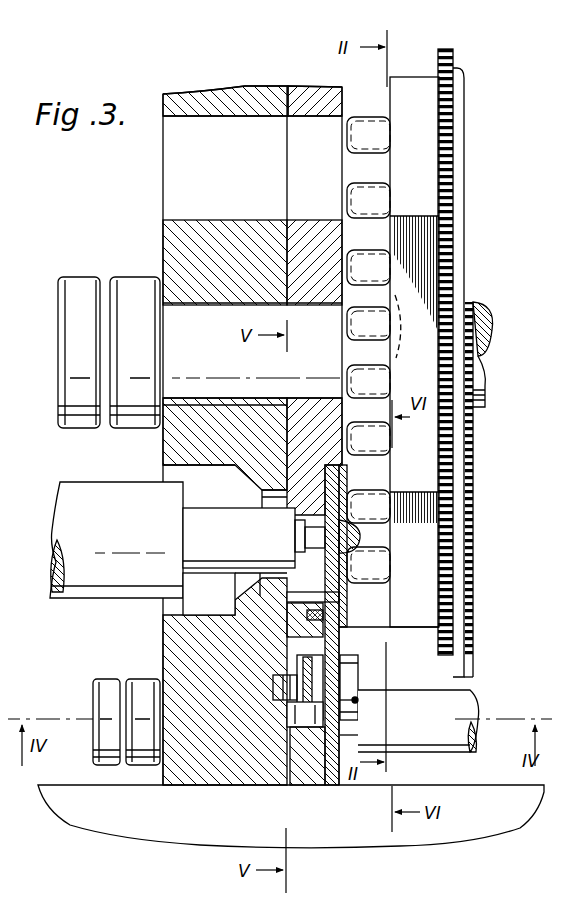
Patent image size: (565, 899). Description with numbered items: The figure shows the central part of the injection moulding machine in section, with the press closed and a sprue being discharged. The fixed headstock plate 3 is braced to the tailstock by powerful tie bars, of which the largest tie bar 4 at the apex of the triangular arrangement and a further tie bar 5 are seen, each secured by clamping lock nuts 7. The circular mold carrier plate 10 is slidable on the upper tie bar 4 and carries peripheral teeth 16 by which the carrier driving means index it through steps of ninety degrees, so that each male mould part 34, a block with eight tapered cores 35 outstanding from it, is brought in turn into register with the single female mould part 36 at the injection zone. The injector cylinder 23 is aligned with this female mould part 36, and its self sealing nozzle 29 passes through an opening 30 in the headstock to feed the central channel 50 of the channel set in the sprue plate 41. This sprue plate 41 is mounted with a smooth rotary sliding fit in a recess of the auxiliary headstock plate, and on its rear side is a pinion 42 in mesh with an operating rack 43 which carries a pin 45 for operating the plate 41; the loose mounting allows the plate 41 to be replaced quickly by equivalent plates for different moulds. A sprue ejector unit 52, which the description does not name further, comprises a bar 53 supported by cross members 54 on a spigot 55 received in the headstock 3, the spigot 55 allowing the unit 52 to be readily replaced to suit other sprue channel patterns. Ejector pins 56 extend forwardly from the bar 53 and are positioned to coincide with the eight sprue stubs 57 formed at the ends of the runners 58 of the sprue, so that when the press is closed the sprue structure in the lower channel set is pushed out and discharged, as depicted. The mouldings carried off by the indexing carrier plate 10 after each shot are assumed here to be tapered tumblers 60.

The fixed headstock plate 3 is at (228, 785).
The tie bar 4 is at (168, 298).
The tie bar 5 is at (466, 708).
The clamping lock nut 7 is at (78, 292).
The mold carrier plate 10 is at (465, 110).
The peripheral teeth 16 is at (455, 58).
The injector cylinder 23 is at (116, 540).
The nozzle 29 is at (300, 540).
The opening 30 is at (170, 468).
The male mould part 34 is at (430, 272).
The tapered core 35 is at (406, 326).
The female mould part 36 is at (368, 621).
The sprue plate 41 is at (335, 483).
The pinion 42 is at (335, 625).
The operating rack 43 is at (290, 580).
The pin 45 is at (348, 592).
The central channel 50 is at (262, 497).
The lever 52 is at (318, 727).
The bar 53 is at (286, 714).
The cross member 54 is at (312, 676).
The spigot 55 is at (272, 690).
The ejector pin 56 is at (358, 700).
The sprue stub 57 is at (352, 736).
The runner 58 is at (372, 655).
The tapered tumbler 60 is at (372, 194).